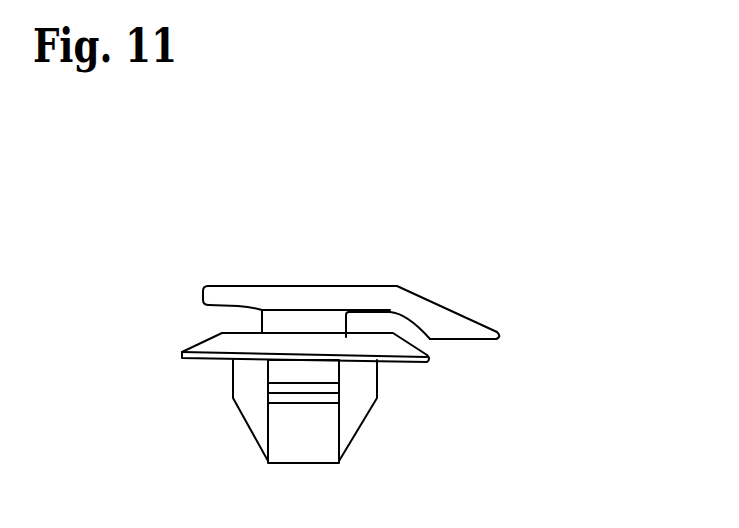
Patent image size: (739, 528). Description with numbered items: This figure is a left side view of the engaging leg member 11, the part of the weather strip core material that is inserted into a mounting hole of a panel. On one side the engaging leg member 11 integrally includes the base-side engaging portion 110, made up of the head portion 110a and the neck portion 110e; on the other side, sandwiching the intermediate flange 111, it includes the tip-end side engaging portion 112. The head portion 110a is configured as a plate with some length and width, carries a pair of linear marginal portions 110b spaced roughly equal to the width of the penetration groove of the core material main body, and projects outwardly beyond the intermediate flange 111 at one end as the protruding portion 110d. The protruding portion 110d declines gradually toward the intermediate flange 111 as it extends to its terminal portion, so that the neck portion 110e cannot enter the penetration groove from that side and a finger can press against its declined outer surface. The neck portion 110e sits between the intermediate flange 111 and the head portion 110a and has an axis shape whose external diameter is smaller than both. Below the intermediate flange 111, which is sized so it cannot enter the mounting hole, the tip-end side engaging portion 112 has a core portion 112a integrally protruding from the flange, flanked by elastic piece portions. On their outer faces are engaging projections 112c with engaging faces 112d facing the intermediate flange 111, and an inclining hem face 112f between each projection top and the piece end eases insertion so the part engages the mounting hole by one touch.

The engaging leg member 11 is at (457, 282).
The base-side engaging portion 110 is at (312, 270).
The head portion 110a is at (349, 300).
The linear marginal portions 110b is at (285, 295).
The protruding portion 110d is at (480, 340).
The neck portion 110e is at (327, 312).
The intermediate flange 111 is at (176, 360).
The tip-end side engaging portion 112 is at (335, 390).
The core portion 112a is at (233, 400).
The engaging projections 112c is at (310, 432).
The engaging faces 112d is at (297, 392).
The inclining hem face 112f is at (323, 402).